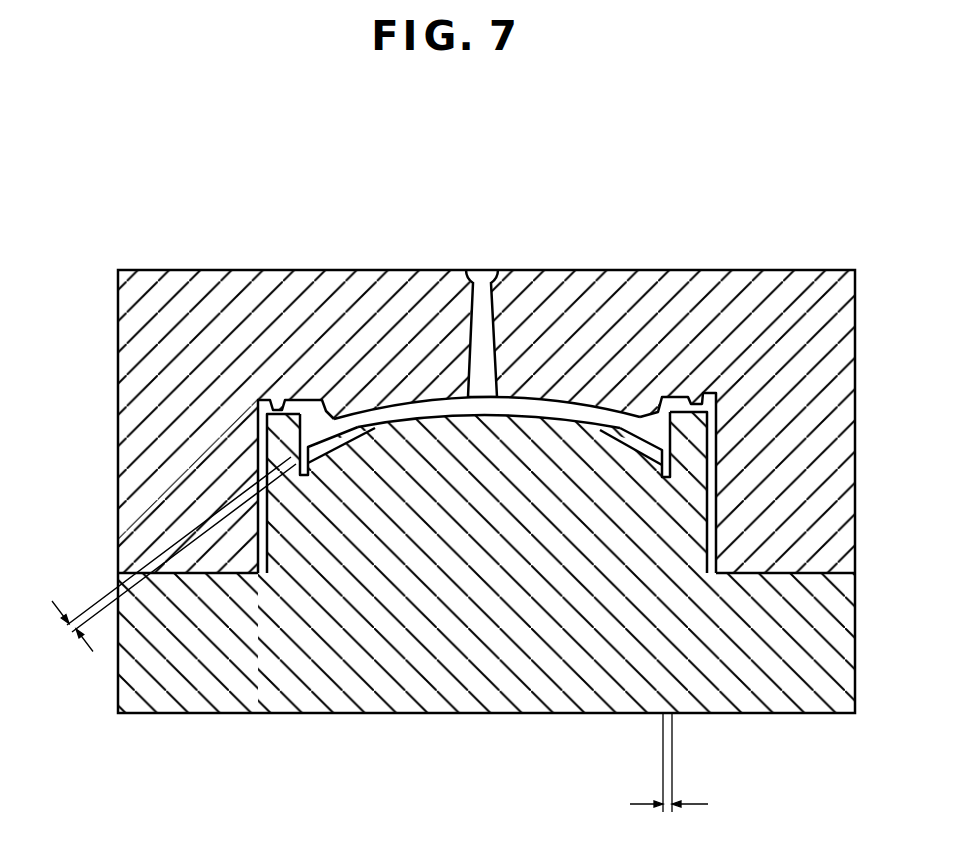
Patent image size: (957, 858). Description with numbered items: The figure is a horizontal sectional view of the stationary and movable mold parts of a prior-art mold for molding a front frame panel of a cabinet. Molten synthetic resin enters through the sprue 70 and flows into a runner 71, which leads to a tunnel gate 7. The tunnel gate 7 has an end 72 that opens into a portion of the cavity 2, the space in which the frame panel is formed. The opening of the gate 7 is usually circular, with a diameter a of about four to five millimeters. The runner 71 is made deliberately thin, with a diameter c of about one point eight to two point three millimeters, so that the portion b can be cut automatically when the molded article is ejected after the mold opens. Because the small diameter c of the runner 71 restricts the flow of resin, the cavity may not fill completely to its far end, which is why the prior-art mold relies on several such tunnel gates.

The sprue 70 is at (488, 316).
The runner 71 is at (568, 410).
The end of tunnel gate 72 is at (672, 397).
The cavity 2 is at (304, 400).
The tunnel gate 7 is at (668, 452).
The diameter of gate opening a is at (669, 778).
The portion to be cut b is at (312, 462).
The diameter of runner c is at (171, 555).